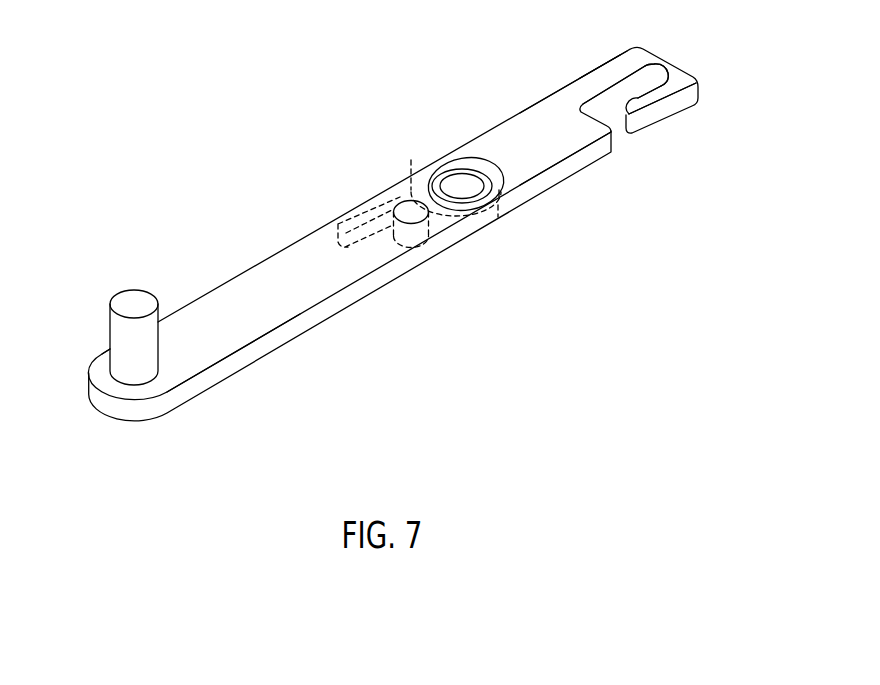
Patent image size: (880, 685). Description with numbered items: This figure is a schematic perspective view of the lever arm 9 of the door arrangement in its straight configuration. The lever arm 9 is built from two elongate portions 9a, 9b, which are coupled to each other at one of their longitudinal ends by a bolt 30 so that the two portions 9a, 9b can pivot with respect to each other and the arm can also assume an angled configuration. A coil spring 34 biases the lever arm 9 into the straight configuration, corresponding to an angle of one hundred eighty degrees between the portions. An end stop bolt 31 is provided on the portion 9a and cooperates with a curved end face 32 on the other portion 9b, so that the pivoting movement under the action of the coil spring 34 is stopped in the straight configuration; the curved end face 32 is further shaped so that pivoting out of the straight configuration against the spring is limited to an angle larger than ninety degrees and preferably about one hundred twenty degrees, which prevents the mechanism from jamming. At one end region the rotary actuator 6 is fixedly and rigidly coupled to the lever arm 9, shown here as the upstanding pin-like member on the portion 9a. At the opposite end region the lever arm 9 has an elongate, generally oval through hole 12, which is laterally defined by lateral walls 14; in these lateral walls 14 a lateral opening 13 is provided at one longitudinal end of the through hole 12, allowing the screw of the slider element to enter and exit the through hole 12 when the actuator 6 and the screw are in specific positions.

The rotary actuator 6 is at (115, 325).
The lever arm 9 is at (272, 156).
The first elongate portion of the lever arm 9a is at (218, 298).
The second elongate portion of the lever arm 9b is at (508, 140).
The elongate through hole 12 is at (652, 72).
The lateral opening 13 is at (634, 136).
The lateral walls 14 is at (606, 83).
The bolt 30 is at (460, 182).
The end stop bolt 31 is at (410, 237).
The curved end face 32 is at (415, 183).
The coil spring 34 is at (501, 198).